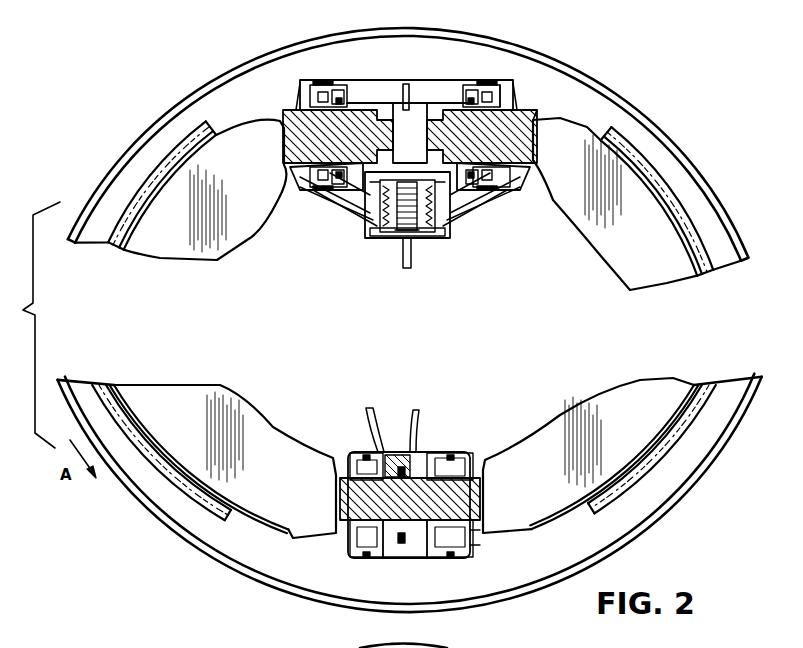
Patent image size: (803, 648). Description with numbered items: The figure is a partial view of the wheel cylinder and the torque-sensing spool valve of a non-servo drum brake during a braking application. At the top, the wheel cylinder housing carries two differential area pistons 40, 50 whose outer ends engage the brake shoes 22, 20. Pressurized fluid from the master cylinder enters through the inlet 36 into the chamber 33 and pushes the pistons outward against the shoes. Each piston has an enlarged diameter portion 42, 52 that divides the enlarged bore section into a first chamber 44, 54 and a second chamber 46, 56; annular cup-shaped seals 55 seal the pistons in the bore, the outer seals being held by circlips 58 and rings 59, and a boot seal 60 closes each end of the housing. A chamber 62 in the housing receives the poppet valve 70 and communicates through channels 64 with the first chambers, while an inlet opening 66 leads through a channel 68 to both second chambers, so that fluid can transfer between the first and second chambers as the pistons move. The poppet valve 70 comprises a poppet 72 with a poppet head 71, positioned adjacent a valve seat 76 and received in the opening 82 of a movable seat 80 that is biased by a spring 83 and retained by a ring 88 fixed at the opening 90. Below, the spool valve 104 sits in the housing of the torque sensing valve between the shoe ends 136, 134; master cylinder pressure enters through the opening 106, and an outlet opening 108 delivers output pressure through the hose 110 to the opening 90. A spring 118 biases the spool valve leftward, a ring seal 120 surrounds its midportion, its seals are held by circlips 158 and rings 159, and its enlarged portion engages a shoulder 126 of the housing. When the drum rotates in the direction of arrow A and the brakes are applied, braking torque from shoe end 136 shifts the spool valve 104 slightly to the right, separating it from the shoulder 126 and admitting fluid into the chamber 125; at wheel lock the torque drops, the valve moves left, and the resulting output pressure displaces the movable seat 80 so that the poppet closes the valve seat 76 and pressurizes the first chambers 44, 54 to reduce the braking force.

The brake shoe 20 is at (181, 233).
The brake shoe 22 is at (655, 241).
The end of shoe 136 is at (152, 417).
The shoe end 134 is at (610, 418).
The chamber 33 is at (406, 133).
The inlet 36 is at (410, 100).
The differential area piston 40 is at (537, 120).
The enlarged diameter portion 42 is at (467, 100).
The first chamber 44 is at (500, 110).
The second chamber 46 is at (447, 97).
The differential area piston 50 is at (290, 117).
The enlarged diameter portion 52 is at (358, 102).
The first chamber 54 is at (343, 97).
The annular cup-shaped seal 55 is at (315, 100).
The second chamber 56 is at (380, 100).
The circlip 58 is at (503, 112).
The ring 59 is at (513, 107).
The boot seal 60 is at (517, 110).
The chamber 62 is at (443, 218).
The channel 64 is at (345, 197).
The inlet opening 66 is at (437, 210).
The channel 68 is at (470, 195).
The poppet valve 70 is at (458, 258).
The poppet head 71 is at (420, 240).
The poppet 72 is at (397, 238).
The valve seat 76 is at (375, 190).
The movable seat 80 is at (423, 227).
The opening 82 is at (430, 233).
The spring 83 is at (375, 200).
The ring 88 is at (390, 238).
The opening 90 is at (413, 250).
The hose 110 is at (408, 280).
The spool valve 104 is at (340, 480).
The opening 106 is at (415, 420).
The outlet opening 108 is at (388, 452).
The spring 118 is at (427, 463).
The ring seal 120 is at (355, 457).
The chamber 125 is at (470, 537).
The shoulder 126 is at (407, 560).
The circlip 158 is at (470, 463).
The ring 159 is at (457, 457).